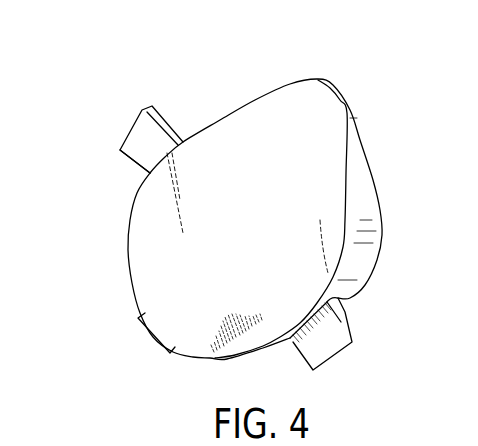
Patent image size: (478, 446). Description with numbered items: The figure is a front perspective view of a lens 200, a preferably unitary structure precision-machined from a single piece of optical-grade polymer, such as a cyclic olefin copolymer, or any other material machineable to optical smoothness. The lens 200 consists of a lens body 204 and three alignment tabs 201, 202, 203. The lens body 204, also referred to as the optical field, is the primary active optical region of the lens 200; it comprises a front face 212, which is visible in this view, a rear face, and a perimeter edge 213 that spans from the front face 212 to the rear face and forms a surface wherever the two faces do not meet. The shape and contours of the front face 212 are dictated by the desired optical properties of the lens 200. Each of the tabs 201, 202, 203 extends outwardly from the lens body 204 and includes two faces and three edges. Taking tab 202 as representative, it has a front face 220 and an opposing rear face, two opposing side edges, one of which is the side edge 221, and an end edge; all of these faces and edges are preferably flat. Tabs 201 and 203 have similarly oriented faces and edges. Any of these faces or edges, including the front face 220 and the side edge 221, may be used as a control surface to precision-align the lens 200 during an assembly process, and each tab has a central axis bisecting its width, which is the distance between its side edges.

The lens 200 is at (153, 34).
The alignment tab 201 is at (325, 348).
The alignment tab 202 is at (142, 133).
The alignment tab 203 is at (143, 327).
The lens body 204 is at (143, 260).
The front face 212 is at (291, 121).
The perimeter edge 213 is at (362, 187).
The front face 220 is at (144, 156).
The side edge 221 is at (168, 120).